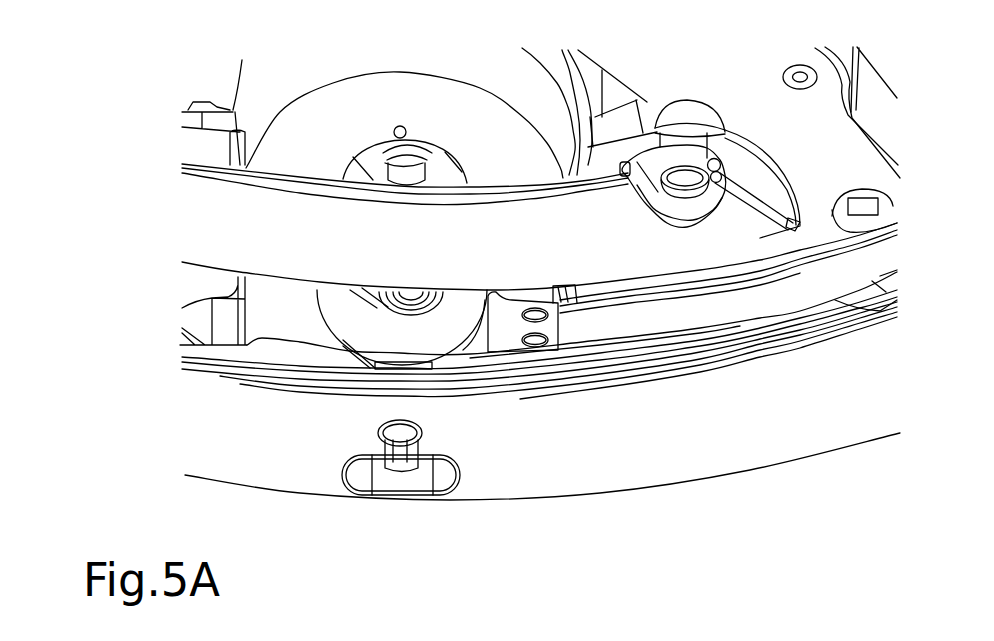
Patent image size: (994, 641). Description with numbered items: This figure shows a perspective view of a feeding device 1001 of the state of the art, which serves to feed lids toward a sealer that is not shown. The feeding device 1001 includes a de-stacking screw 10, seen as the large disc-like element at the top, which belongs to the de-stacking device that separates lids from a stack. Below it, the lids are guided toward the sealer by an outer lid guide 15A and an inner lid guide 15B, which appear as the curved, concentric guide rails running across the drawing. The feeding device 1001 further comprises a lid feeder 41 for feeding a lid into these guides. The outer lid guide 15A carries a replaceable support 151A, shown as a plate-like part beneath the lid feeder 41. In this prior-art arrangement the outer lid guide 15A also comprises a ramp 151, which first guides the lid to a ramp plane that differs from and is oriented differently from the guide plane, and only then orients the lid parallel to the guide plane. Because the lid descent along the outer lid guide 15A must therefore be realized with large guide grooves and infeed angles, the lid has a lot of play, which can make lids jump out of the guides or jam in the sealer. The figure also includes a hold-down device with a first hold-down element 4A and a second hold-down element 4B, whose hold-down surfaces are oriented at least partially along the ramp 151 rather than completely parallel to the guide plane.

The feeding device 1001 is at (160, 96).
The de-stacking screw 10 is at (437, 97).
The lid feeder 41 is at (283, 317).
The replaceable support 151A is at (404, 367).
The ramp 151 is at (469, 370).
The outer lid guide 15A is at (517, 410).
The first hold-down element 4A is at (510, 345).
The second hold-down element 4B is at (607, 322).
The inner lid guide 15B is at (637, 258).